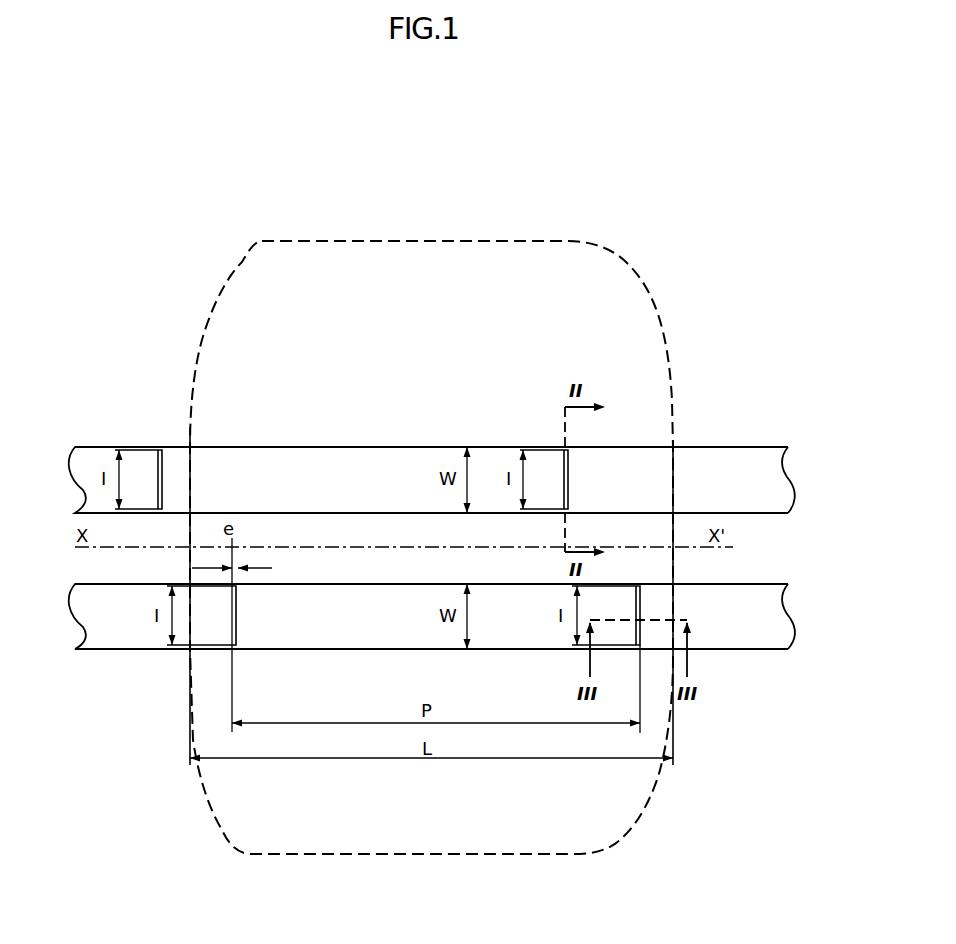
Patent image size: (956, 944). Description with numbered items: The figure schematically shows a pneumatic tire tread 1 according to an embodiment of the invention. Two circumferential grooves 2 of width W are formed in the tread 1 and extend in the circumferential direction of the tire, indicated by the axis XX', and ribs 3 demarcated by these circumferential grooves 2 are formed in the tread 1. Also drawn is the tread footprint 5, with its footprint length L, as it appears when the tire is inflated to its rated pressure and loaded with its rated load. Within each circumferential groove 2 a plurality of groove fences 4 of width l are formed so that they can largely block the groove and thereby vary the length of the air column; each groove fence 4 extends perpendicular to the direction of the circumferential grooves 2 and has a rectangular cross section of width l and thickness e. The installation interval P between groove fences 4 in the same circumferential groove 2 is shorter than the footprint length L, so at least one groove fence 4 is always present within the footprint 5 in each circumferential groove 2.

The pneumatic tire tread 1 is at (650, 358).
The circumferential groove 2 is at (730, 492).
The rib 3 is at (373, 660).
The groove fence 4 is at (160, 452).
The tread footprint 5 is at (212, 311).